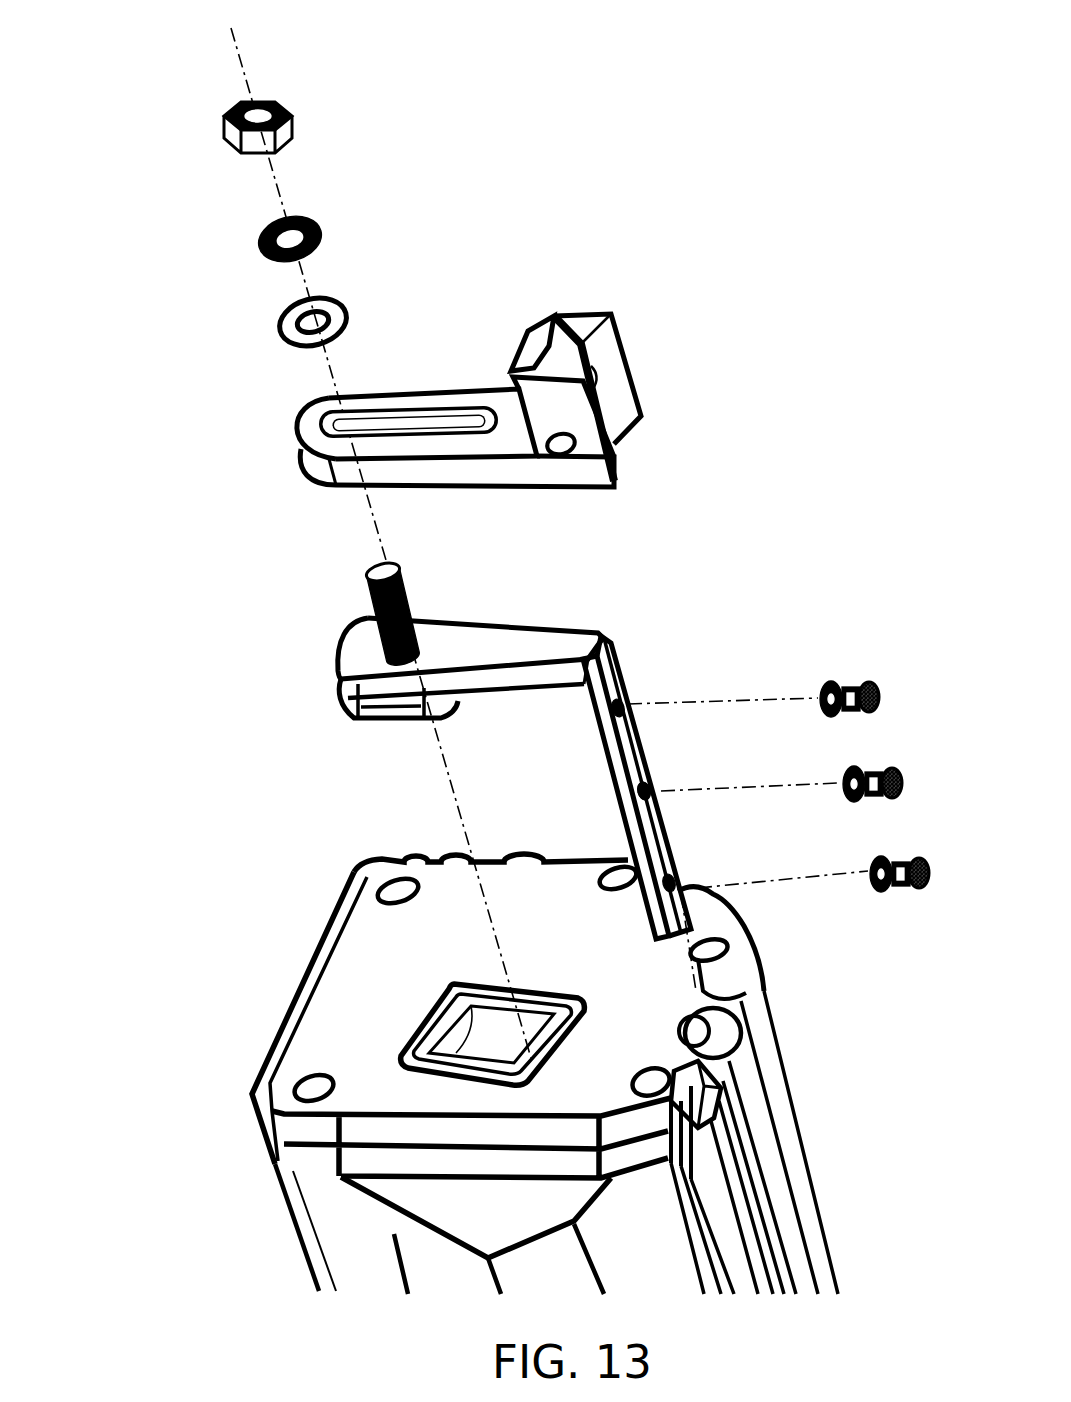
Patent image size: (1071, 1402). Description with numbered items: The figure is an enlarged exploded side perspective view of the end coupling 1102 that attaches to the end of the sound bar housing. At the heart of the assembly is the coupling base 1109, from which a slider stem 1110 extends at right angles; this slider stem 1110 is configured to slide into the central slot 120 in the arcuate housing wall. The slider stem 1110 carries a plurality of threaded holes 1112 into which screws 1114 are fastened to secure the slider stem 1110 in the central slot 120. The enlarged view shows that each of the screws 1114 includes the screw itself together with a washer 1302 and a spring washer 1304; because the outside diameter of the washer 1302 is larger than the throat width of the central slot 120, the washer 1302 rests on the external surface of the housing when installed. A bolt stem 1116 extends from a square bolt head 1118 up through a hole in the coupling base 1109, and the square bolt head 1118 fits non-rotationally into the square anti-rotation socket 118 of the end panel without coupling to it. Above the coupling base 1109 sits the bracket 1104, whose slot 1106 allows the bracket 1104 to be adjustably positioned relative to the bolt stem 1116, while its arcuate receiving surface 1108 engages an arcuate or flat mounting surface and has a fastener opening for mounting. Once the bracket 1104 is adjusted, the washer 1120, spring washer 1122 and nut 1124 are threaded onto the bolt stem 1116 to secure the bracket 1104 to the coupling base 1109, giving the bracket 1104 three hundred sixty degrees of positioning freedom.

The end coupling 1102 is at (157, 44).
The nut 1124 is at (230, 136).
The spring washer 1122 is at (262, 254).
The washer 1120 is at (281, 331).
The bracket 1104 is at (502, 400).
The slot 1106 is at (380, 423).
The arcuate receiving surface 1108 is at (620, 390).
The bolt stem 1116 is at (364, 585).
The coupling base 1109 is at (491, 766).
The square bolt head 1118 is at (392, 715).
The slider stem 1110 is at (617, 666).
The threaded holes 1112 is at (647, 787).
The washer 1302 is at (823, 677).
The spring washer 1304 is at (843, 680).
The screws 1114 is at (873, 687).
The anti-rotation socket 118 is at (440, 992).
The central slot 120 is at (681, 1033).